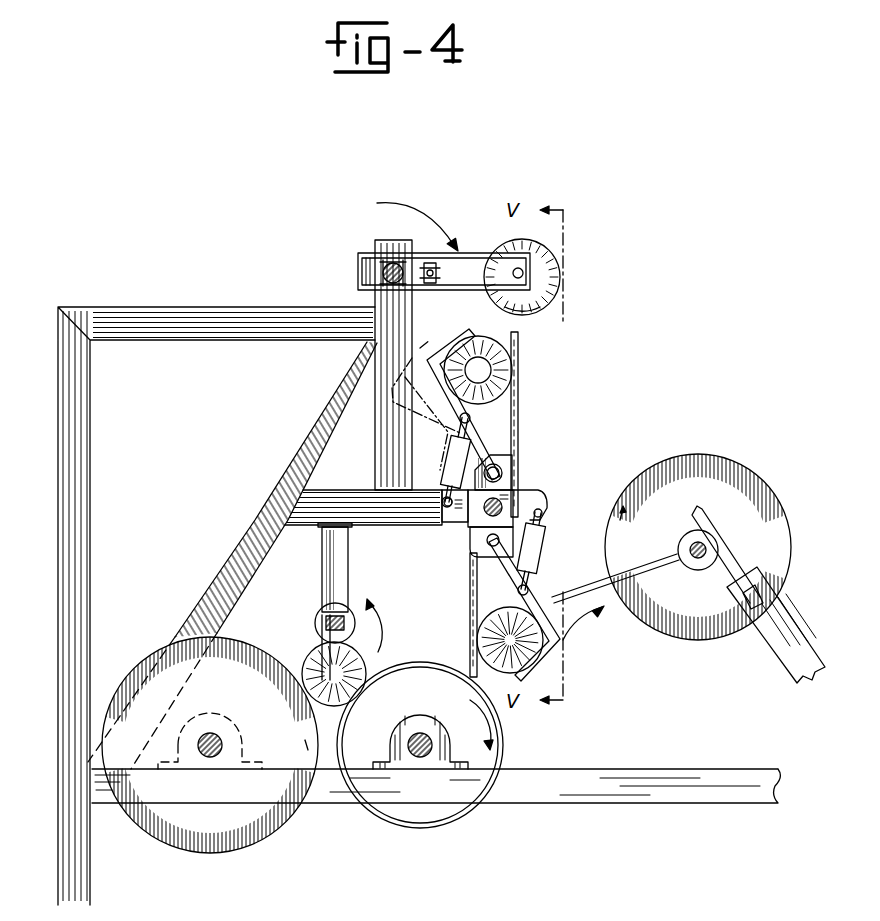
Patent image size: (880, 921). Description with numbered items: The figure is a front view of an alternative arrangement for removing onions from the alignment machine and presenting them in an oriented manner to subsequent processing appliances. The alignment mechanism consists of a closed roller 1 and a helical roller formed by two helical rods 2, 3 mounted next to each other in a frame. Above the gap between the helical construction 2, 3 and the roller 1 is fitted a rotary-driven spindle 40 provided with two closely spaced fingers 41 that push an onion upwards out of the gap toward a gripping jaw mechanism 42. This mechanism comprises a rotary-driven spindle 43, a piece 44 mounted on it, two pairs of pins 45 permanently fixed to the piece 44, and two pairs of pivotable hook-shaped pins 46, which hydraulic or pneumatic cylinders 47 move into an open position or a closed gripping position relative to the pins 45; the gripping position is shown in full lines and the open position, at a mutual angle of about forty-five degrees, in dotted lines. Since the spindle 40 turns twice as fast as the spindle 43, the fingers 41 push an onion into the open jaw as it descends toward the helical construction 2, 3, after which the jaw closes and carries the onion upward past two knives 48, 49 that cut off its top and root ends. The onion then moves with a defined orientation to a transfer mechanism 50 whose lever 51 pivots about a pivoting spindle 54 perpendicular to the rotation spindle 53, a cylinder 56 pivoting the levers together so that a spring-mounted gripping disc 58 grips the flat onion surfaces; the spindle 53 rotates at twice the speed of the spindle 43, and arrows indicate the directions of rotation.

The closed roller 1 is at (222, 848).
The helical rod 2 is at (420, 767).
The helical rod 3 is at (417, 830).
The spindle 40 is at (325, 615).
The fingers 41 is at (322, 660).
The gripping jaw mechanism 42 is at (530, 475).
The spindle 43 is at (500, 503).
The piece 44 is at (487, 528).
The pins 45 is at (522, 412).
The hooked-shaped pins 46 is at (428, 362).
The hydraulic or pneumatic cylinders 47 is at (442, 478).
The knife 48 is at (715, 552).
The knife 49 is at (697, 460).
The transfer mechanism 50 is at (568, 263).
The lever 51 is at (462, 256).
The rotation spindle 53 is at (383, 278).
The pivoting spindle 54 is at (393, 252).
The pneumatic or hydraulic cylinder 56 is at (438, 272).
The gripping disc 58 is at (535, 310).